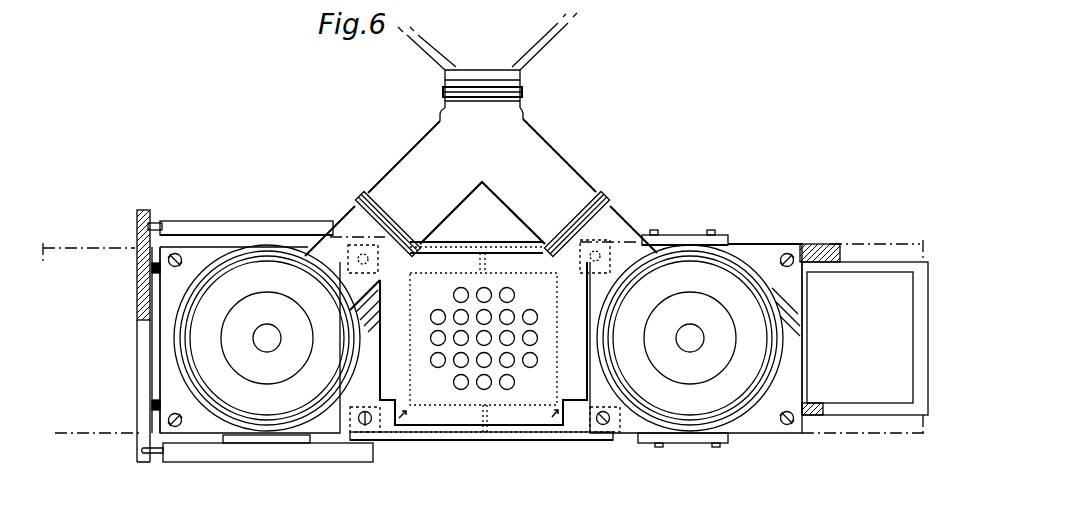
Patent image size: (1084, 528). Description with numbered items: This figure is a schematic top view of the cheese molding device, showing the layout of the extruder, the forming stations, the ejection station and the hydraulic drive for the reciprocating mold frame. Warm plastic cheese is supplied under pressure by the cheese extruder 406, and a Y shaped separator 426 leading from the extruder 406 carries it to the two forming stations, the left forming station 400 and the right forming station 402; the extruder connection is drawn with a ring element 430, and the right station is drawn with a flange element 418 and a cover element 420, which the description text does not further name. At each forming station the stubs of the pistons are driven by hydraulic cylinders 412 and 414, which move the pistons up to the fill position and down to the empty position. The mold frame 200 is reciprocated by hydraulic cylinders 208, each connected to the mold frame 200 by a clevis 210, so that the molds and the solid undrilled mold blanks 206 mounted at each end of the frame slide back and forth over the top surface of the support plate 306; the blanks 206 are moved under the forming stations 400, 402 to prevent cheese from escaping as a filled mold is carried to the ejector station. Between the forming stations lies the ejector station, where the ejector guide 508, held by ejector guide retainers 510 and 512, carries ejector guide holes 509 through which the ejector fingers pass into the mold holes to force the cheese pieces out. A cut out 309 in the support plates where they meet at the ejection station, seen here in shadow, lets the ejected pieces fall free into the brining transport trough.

The mold frame 200 is at (137, 233).
The mold blanks 206 is at (888, 362).
The hydraulic cylinders 208 is at (267, 221).
The clevis 210 is at (157, 224).
The support plate 306 is at (97, 433).
The cut out 309 is at (410, 290).
The forming station 400 is at (343, 430).
The forming station 402 is at (765, 398).
The extruder 406 is at (473, 65).
The hydraulic cylinder 412 is at (267, 338).
The hydraulic cylinder 414 is at (690, 338).
The flange 418 is at (767, 253).
The cover plate 420 is at (738, 255).
The Y shaped separator 426 is at (473, 132).
The clamp ring 430 is at (445, 90).
The ejector guide 508 is at (398, 340).
The ejector guide holes 509 is at (438, 360).
The ejector guide retainer 510 is at (482, 244).
The ejector guide retainer 512 is at (587, 438).